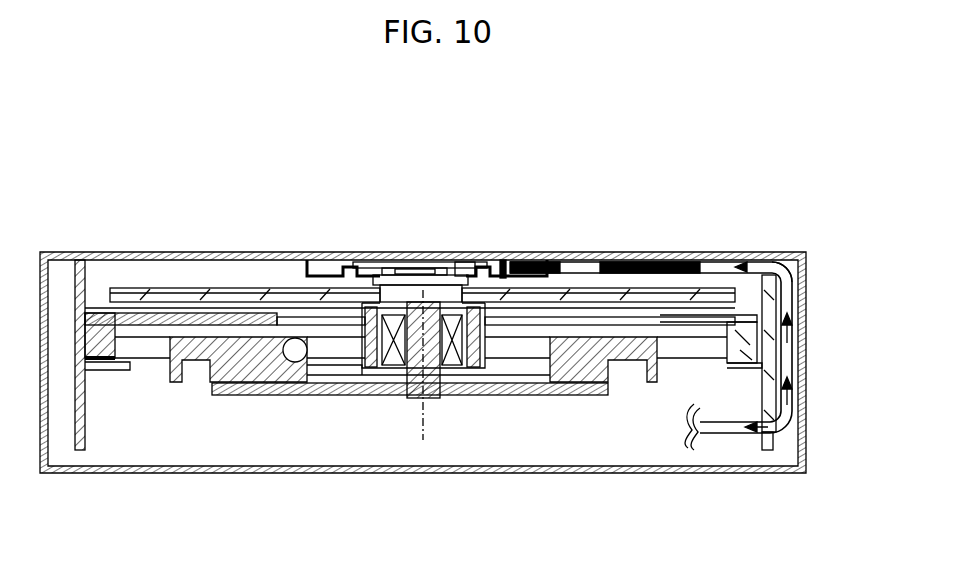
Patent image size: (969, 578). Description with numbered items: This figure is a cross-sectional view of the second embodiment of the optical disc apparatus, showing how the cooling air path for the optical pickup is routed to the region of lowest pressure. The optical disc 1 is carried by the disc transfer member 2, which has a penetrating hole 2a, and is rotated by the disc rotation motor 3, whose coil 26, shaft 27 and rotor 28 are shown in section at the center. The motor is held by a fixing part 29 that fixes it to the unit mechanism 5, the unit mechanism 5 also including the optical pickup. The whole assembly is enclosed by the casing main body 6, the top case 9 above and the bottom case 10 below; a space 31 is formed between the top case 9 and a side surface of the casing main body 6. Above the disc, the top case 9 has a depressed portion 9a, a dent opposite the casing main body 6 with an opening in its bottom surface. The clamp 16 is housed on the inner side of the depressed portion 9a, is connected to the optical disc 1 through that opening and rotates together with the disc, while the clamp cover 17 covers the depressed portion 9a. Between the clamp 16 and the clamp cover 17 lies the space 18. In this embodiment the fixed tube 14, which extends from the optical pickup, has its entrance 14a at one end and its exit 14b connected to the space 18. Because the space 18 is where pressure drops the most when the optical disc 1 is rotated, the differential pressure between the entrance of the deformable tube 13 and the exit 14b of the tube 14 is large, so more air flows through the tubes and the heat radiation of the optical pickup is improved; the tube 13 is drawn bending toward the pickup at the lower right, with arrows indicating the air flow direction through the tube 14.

The optical disc 1 is at (194, 300).
The disc transfer member 2 is at (102, 320).
The penetrating hole 2a is at (330, 372).
The disc rotation motor 3 is at (365, 368).
The unit mechanism 5 is at (203, 393).
The casing main body 6 is at (75, 410).
The top case 9 is at (60, 253).
The depressed portion 9a is at (305, 258).
The bottom case 10 is at (112, 474).
The deformable tube 13 is at (777, 442).
The fixed tube 14 is at (690, 268).
The entrance of the tube 14a is at (796, 286).
The exit of the tube 14b is at (527, 262).
The clamp 16 is at (467, 262).
The clamp cover 17 is at (370, 262).
The space 18 is at (507, 262).
The coil 26 is at (450, 365).
The shaft 27 is at (410, 398).
The rotor 28 is at (485, 368).
The fixing part 29 is at (263, 395).
The space 31 is at (772, 275).